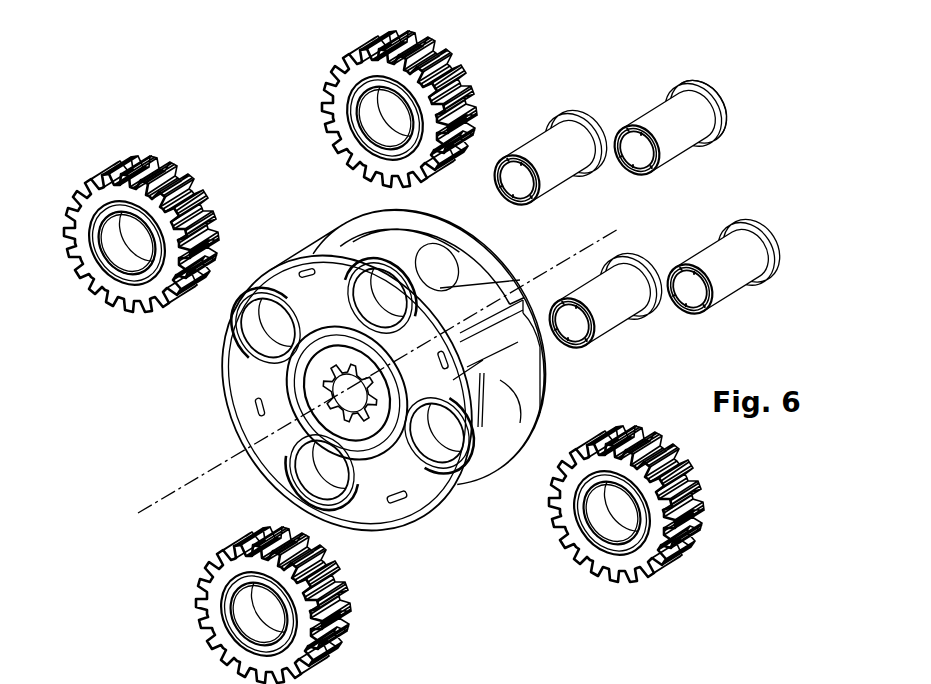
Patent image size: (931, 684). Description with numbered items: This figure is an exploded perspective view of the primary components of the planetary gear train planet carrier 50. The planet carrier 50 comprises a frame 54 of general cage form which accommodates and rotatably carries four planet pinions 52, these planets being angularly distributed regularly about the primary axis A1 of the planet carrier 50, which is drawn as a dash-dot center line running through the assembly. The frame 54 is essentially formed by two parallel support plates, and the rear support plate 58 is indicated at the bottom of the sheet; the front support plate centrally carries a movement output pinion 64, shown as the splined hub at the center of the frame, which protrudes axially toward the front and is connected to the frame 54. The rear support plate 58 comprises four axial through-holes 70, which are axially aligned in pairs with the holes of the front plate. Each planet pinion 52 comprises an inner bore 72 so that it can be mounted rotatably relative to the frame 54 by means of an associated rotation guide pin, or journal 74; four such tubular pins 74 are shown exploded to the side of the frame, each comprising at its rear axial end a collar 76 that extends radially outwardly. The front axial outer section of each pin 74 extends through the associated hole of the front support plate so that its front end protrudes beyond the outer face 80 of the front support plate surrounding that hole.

The planet carrier 50 is at (197, 72).
The planet pinion 52 is at (328, 70).
The frame 54 is at (384, 367).
The rear support plate 58 is at (580, 683).
The movement output pinion 64 is at (300, 400).
The axial through-hole 70 is at (525, 683).
The inner bore 72 is at (122, 248).
The rotation guide pin 74 is at (586, 100).
The collar 76 is at (727, 125).
The outer face 80 is at (470, 462).
The primary axis A1 is at (162, 499).